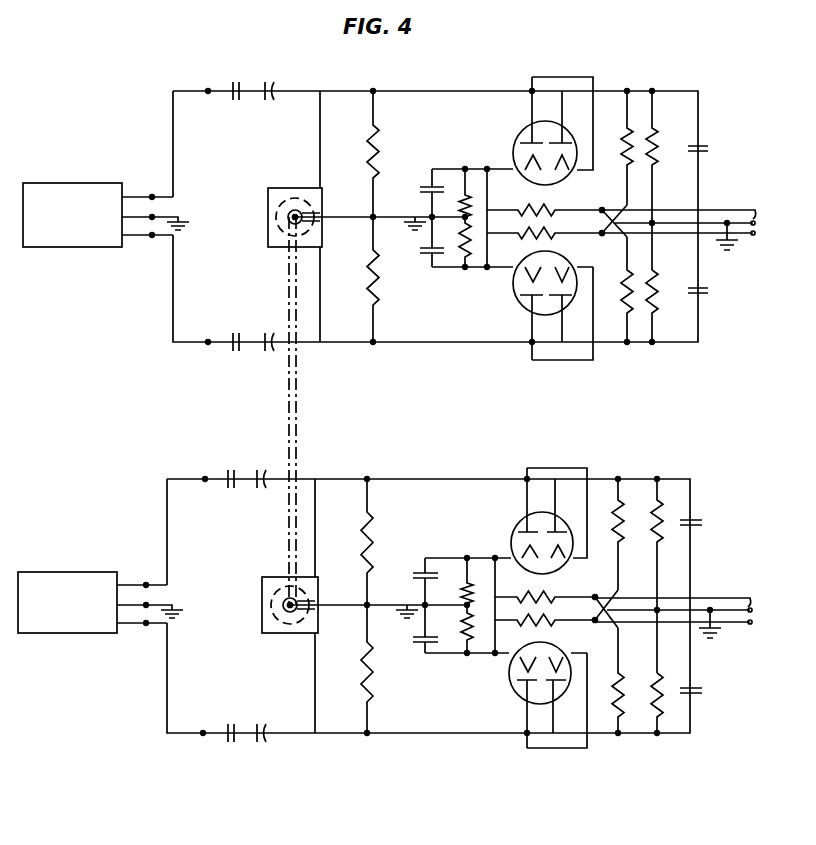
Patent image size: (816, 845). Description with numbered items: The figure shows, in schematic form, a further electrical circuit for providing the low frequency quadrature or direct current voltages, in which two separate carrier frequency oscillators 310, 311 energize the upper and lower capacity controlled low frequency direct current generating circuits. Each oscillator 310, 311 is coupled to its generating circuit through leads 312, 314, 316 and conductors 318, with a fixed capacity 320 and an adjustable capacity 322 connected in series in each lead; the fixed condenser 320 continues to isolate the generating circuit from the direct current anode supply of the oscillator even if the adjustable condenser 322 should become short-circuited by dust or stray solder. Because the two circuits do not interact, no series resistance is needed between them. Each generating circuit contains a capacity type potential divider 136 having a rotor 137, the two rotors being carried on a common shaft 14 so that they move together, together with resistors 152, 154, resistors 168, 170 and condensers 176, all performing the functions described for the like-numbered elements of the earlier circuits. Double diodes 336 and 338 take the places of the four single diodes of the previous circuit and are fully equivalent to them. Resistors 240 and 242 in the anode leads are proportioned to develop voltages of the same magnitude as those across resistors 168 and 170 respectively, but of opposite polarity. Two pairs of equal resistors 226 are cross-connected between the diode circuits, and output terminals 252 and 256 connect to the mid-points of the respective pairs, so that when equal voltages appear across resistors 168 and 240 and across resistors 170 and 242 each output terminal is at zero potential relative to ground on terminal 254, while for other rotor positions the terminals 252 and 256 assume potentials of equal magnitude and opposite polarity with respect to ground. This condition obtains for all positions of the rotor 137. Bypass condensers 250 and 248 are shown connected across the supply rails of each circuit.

The common shaft 14 is at (296, 413).
The capacity type potential divider 136 is at (268, 232).
The rotor 137 is at (290, 228).
The resistor 152 is at (368, 137).
The resistor 154 is at (368, 288).
The resistor 168 is at (466, 195).
The resistor 170 is at (466, 258).
The condenser 176 is at (430, 185).
The equal resistors 226 is at (622, 165).
The resistor 240 is at (655, 165).
The resistor 242 is at (655, 270).
The capacitor 248 is at (705, 291).
The capacitor 250 is at (705, 150).
The terminal 252 is at (754, 209).
The ground terminal 254 is at (755, 212).
The terminal 256 is at (756, 238).
The oscillator 310 is at (70, 183).
The oscillator 311 is at (55, 572).
The oscillator output lead 312 is at (152, 195).
The oscillator ground lead 314 is at (152, 216).
The oscillator output lead 316 is at (152, 237).
The conductor 318 is at (208, 90).
The fixed capacity 320 is at (234, 101).
The adjustable capacity 322 is at (270, 100).
The double diode 336 is at (520, 137).
The double diode 338 is at (516, 300).